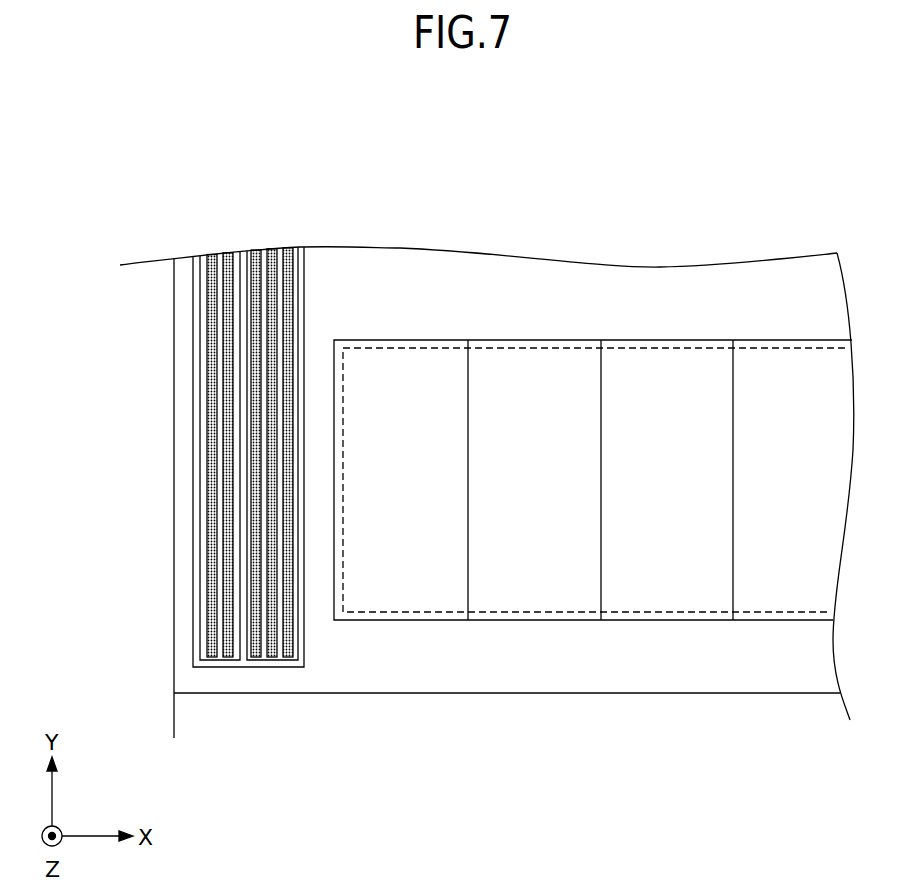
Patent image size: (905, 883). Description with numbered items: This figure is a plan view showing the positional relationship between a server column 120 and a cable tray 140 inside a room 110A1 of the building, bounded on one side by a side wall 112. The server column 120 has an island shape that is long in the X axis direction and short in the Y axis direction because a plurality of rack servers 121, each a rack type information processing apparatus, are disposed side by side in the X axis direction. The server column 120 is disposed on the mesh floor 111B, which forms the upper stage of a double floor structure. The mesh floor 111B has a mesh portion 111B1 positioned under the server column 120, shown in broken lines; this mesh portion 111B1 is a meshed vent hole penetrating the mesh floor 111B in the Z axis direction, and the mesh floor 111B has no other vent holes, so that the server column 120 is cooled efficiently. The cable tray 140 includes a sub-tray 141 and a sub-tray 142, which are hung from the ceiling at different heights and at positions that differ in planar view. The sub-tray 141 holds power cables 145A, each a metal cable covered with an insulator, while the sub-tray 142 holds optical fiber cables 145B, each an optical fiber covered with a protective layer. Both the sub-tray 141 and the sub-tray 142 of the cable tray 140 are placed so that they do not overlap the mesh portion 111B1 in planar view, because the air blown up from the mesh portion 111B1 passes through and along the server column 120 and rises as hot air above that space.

The room 110A1 is at (723, 657).
The mesh floor 111B is at (568, 657).
The mesh portion 111B1 is at (428, 610).
The side wall 112 is at (174, 532).
The server column 120 is at (592, 340).
The rack server 121 is at (517, 362).
The cable tray 140 is at (317, 159).
The sub-tray 141 is at (281, 471).
The sub-tray 142 is at (210, 471).
The power cable 145A is at (290, 654).
The optical fiber cable 145B is at (213, 654).